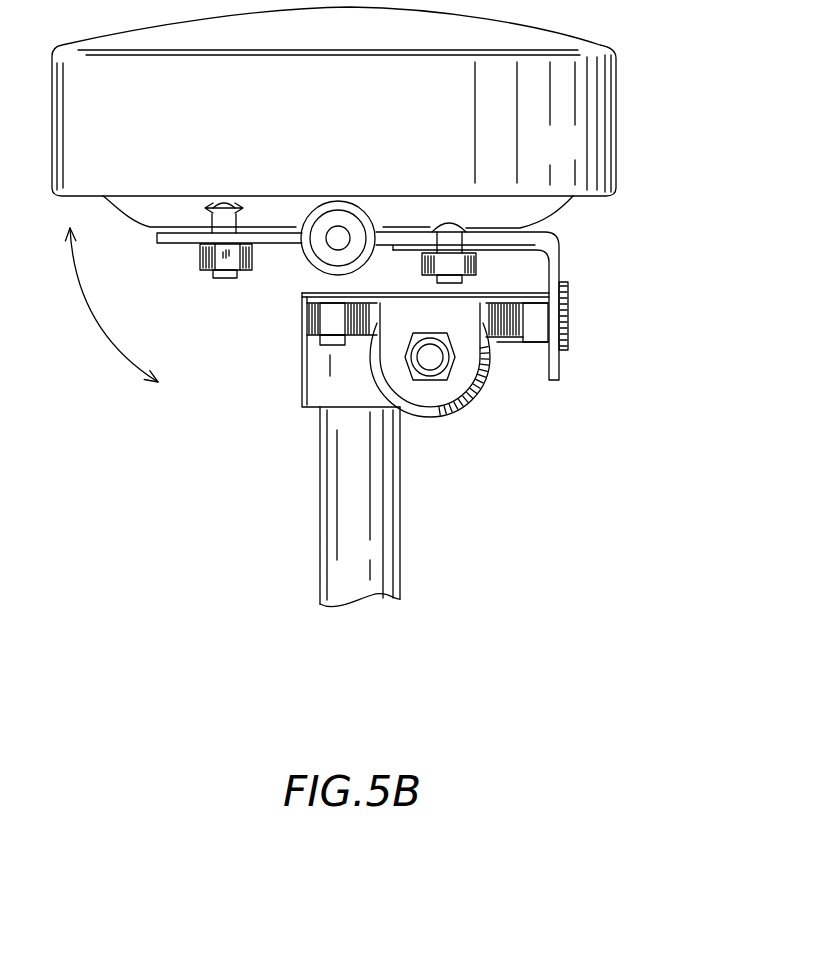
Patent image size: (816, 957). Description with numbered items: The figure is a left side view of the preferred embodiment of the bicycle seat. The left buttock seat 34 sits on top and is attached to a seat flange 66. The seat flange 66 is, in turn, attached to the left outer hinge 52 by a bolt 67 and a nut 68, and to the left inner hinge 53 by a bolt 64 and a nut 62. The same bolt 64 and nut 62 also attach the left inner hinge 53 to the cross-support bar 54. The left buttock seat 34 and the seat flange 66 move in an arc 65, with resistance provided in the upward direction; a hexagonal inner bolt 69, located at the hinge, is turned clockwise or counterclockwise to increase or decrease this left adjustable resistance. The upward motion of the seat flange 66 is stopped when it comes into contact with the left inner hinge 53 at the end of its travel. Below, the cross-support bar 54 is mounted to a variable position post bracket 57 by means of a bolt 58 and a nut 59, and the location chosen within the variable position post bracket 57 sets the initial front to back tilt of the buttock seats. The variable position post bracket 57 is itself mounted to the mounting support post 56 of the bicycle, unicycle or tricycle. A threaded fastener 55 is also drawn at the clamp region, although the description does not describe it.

The left buttock seat 34 is at (596, 85).
The left outer hinge 52 is at (193, 240).
The left inner hinge 53 is at (475, 272).
The cross-support bar 54 is at (557, 365).
The threaded clamp bolt 55 is at (508, 337).
The mounting support post 56 is at (400, 527).
The variable position post bracket 57 is at (302, 407).
The bolt 58 is at (433, 360).
The nut 59 is at (468, 385).
The nut 62 is at (495, 238).
The bolt 64 is at (447, 226).
The arc 65 is at (110, 328).
The seat flange 66 is at (512, 210).
The bolt 67 is at (222, 200).
The nut 68 is at (197, 277).
The hexagonal inner bolt 69 is at (333, 243).